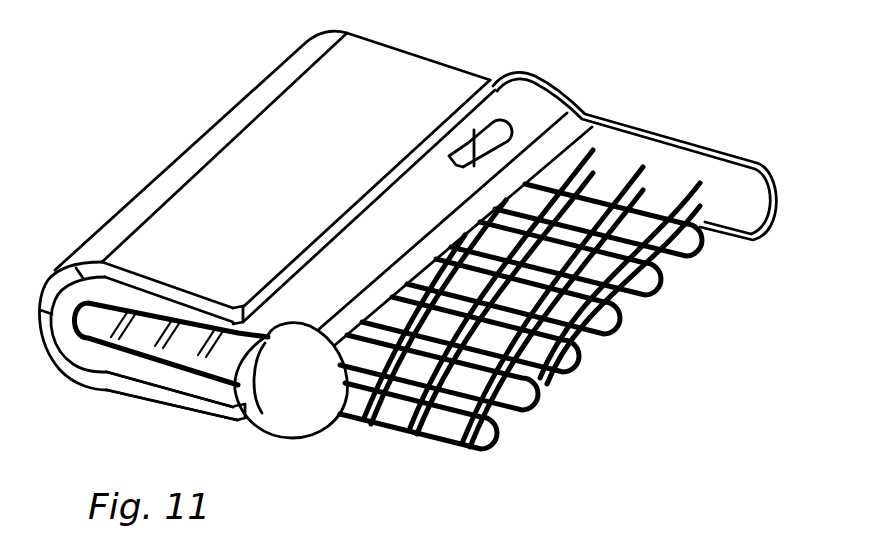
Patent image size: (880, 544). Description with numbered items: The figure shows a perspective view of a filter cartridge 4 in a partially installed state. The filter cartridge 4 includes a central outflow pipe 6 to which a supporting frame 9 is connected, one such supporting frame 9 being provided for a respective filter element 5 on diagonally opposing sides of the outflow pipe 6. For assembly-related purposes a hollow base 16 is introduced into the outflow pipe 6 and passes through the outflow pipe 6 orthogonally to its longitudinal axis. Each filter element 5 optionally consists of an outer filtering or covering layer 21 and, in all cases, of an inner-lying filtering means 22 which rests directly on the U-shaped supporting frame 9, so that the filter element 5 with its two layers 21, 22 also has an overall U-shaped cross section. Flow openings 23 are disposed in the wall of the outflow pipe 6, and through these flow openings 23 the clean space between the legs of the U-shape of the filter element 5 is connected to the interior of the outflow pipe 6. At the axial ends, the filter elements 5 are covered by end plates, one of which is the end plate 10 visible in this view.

The filter cartridge 4 is at (240, 60).
The filter element 5 is at (424, 70).
The outflow pipe 6 is at (376, 267).
The supporting frame 9 is at (86, 342).
The end plate 10 is at (714, 152).
The hollow base 16 is at (450, 160).
The outer filtering or covering layer 21 is at (114, 383).
The inner-lying filtering means 22 is at (164, 378).
The flow openings 23 is at (345, 396).